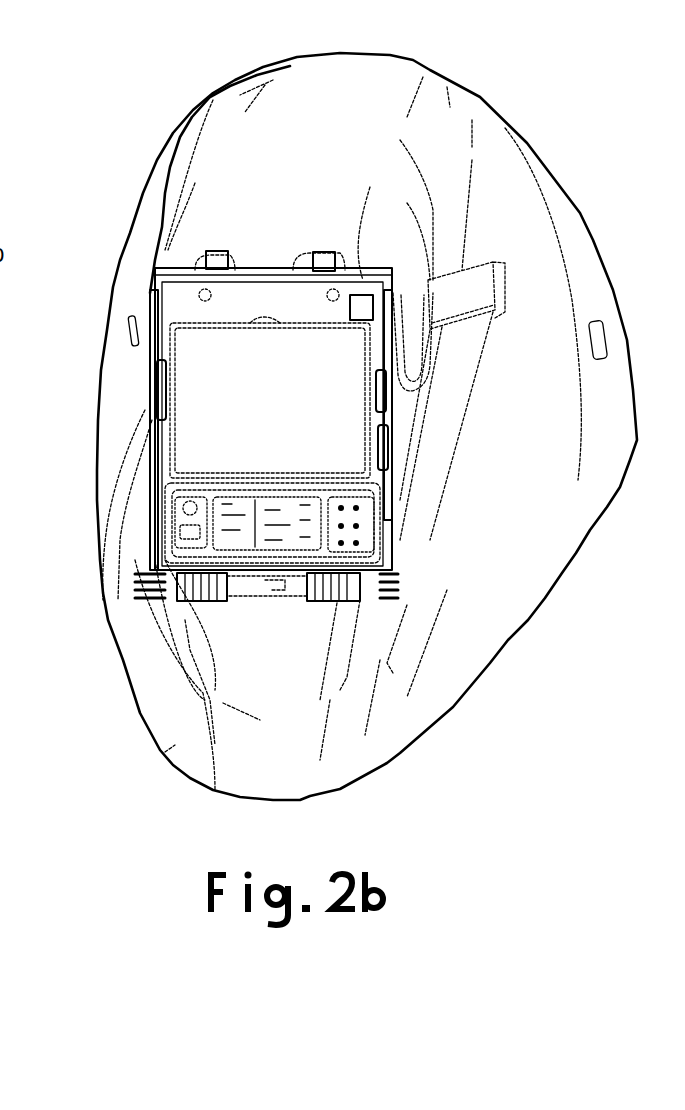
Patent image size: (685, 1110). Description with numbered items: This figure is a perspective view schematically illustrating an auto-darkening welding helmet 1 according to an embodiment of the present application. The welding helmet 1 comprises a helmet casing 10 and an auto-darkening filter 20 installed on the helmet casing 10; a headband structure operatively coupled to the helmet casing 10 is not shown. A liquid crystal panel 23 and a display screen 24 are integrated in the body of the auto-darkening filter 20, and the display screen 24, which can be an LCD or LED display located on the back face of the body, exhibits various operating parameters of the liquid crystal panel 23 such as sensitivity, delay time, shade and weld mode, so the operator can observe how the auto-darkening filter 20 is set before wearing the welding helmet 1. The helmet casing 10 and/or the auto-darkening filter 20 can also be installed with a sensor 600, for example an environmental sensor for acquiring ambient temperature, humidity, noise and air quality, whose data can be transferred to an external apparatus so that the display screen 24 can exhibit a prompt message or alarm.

The auto-darkening welding helmet 1 is at (517, 66).
The helmet casing 10 is at (563, 230).
The auto-darkening filter 20 is at (295, 396).
The liquid crystal panel 23 is at (270, 397).
The display screen 24 is at (212, 540).
The sensor 600 is at (374, 296).